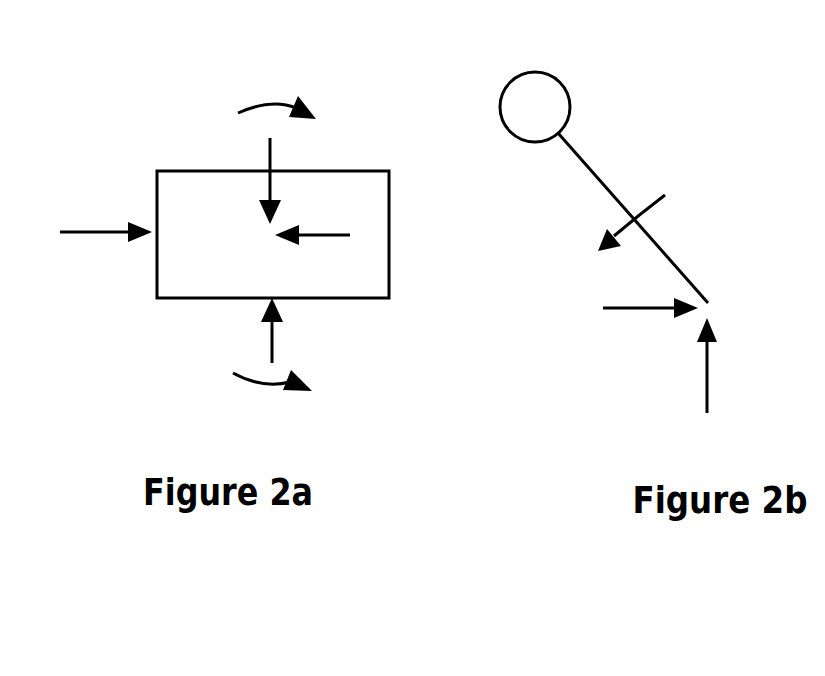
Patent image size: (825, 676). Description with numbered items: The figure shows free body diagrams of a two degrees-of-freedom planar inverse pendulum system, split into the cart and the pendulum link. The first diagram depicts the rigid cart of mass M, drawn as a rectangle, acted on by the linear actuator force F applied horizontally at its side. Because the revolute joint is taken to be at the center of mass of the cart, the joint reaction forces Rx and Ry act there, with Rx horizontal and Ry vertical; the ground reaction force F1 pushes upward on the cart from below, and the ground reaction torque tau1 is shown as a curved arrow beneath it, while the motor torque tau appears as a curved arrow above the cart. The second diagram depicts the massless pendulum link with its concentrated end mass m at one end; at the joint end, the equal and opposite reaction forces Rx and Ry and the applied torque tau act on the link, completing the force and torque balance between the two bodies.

In FIG. 2A, the mass M is at (273, 234).
In FIG. 2A, the force F is at (106, 204).
In FIG. 2A, the reaction force Ry is at (238, 166).
In FIG. 2B, the reaction force Ry is at (738, 367).
In FIG. 2A, the reaction force Rx is at (329, 209).
In FIG. 2B, the reaction force Rx is at (650, 282).
In FIG. 2A, the ground reaction force F1 is at (244, 332).
In FIG. 2A, the torque tau is at (277, 86).
In FIG. 2B, the torque tau is at (631, 194).
In FIG. 2A, the ground reaction torque tau1 is at (302, 377).
In FIG. 2B, the end mass m is at (535, 107).